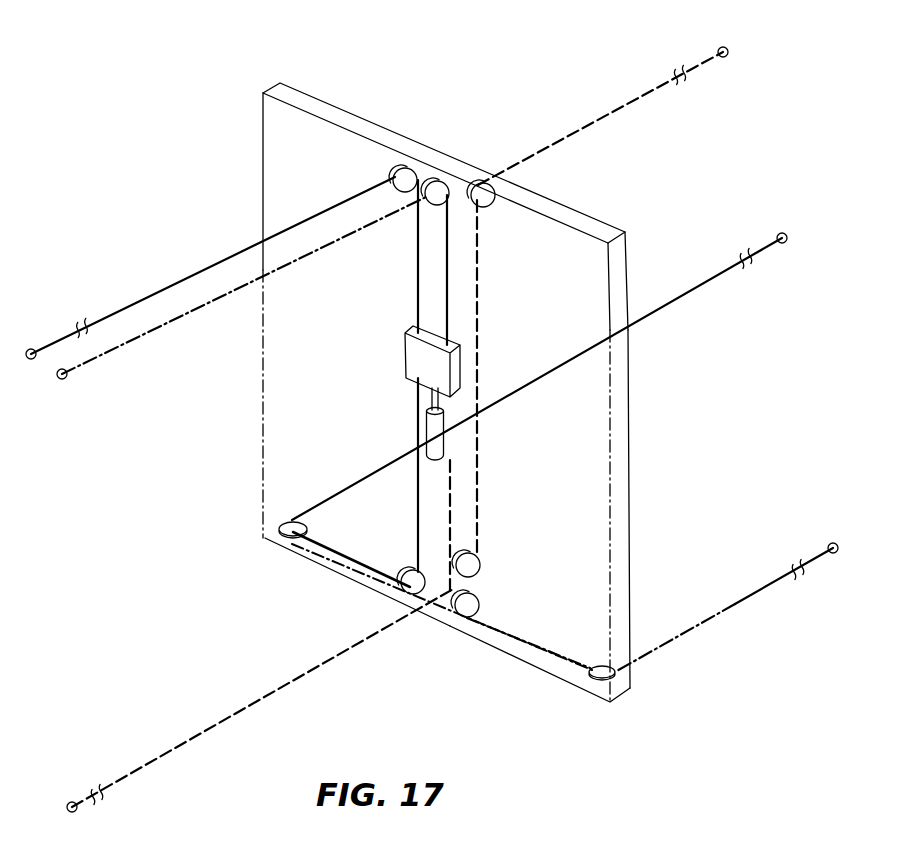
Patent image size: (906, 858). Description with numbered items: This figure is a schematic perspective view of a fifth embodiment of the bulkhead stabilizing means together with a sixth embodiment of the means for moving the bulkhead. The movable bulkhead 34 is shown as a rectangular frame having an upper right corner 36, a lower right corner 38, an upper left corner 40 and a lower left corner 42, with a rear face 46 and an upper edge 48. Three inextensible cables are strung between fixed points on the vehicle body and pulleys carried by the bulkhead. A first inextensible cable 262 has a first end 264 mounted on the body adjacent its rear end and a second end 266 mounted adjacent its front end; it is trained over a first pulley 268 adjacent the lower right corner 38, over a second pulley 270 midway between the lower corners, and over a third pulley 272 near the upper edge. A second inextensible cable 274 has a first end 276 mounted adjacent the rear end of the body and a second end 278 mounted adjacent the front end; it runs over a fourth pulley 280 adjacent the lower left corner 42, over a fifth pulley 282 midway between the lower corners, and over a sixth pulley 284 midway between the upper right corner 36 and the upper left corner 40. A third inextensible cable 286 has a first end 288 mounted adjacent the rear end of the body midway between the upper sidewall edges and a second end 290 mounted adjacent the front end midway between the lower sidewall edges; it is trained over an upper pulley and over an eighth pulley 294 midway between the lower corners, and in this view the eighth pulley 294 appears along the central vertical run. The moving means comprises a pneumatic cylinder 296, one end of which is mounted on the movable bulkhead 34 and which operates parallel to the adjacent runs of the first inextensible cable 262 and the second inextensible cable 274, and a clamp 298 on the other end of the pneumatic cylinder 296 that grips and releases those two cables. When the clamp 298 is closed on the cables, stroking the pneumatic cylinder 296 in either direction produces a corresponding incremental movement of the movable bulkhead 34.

The movable bulkhead 34 is at (352, 115).
The upper right corner 36 is at (268, 88).
The lower right corner 38 is at (263, 546).
The upper left corner 40 is at (630, 243).
The lower left corner 42 is at (612, 706).
The rear face 46 is at (633, 497).
The upper edge 48 is at (404, 138).
The first inextensible cable 262 is at (201, 268).
The first end of first inextensible cable 264 is at (781, 233).
The second end of first inextensible cable 266 is at (31, 349).
The first pulley 268 is at (304, 529).
The second pulley 270 is at (407, 573).
The third pulley 272 is at (395, 178).
The second inextensible cable 274 is at (192, 320).
The first end of second inextensible cable 276 is at (830, 543).
The second end of second inextensible cable 278 is at (62, 380).
The fourth pulley 280 is at (598, 665).
The fifth pulley 282 is at (472, 608).
The sixth pulley 284 is at (445, 190).
The third inextensible cable 286 is at (196, 735).
The first end of third inextensible cable 288 is at (719, 48).
The second end of third inextensible cable 290 is at (69, 802).
The eighth pulley 294 is at (490, 210).
The pneumatic cylinder 296 is at (446, 455).
The clamp 298 is at (458, 365).